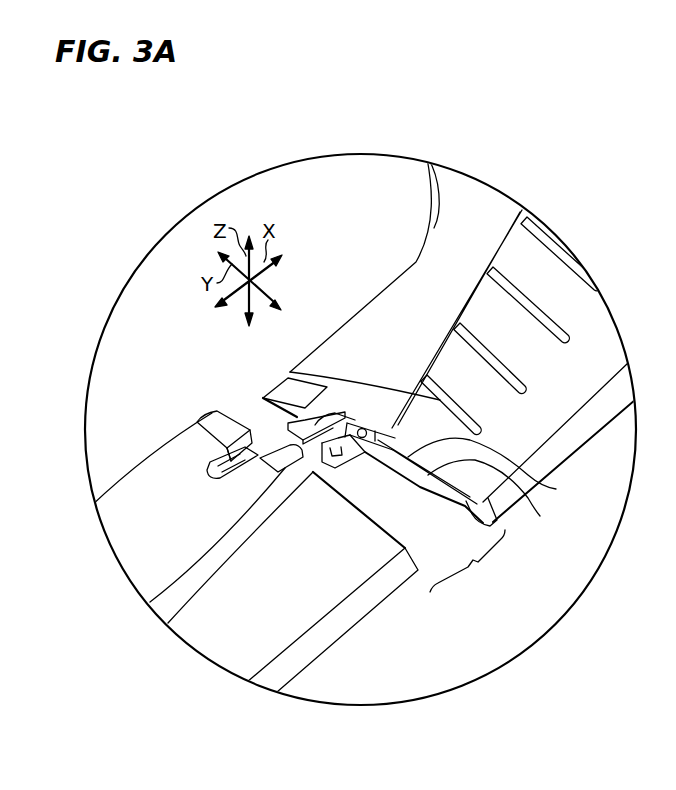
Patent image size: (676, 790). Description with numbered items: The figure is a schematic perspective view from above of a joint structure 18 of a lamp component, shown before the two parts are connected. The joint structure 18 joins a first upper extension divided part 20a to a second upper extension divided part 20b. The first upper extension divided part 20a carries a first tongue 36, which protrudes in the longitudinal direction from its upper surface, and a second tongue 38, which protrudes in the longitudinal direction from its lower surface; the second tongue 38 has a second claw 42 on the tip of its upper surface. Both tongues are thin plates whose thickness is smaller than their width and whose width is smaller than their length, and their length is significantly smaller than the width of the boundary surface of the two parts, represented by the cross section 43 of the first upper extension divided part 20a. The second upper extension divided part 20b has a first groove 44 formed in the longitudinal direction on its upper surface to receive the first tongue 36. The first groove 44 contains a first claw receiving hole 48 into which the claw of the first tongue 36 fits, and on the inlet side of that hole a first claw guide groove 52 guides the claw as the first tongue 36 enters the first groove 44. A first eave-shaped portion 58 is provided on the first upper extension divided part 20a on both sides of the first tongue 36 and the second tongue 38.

The first upper extension divided part 20a is at (412, 292).
The second upper extension divided part 20b is at (157, 488).
The joint structure 18 is at (467, 562).
The first tongue 36 is at (313, 420).
The second tongue 38 is at (355, 428).
The second claw 42 is at (337, 416).
The cross section 43 is at (548, 487).
The first groove 44 is at (216, 450).
The first claw receiving hole 48 is at (212, 463).
The first claw guide groove 52 is at (232, 454).
The first eave-shaped portion 58 is at (275, 395).